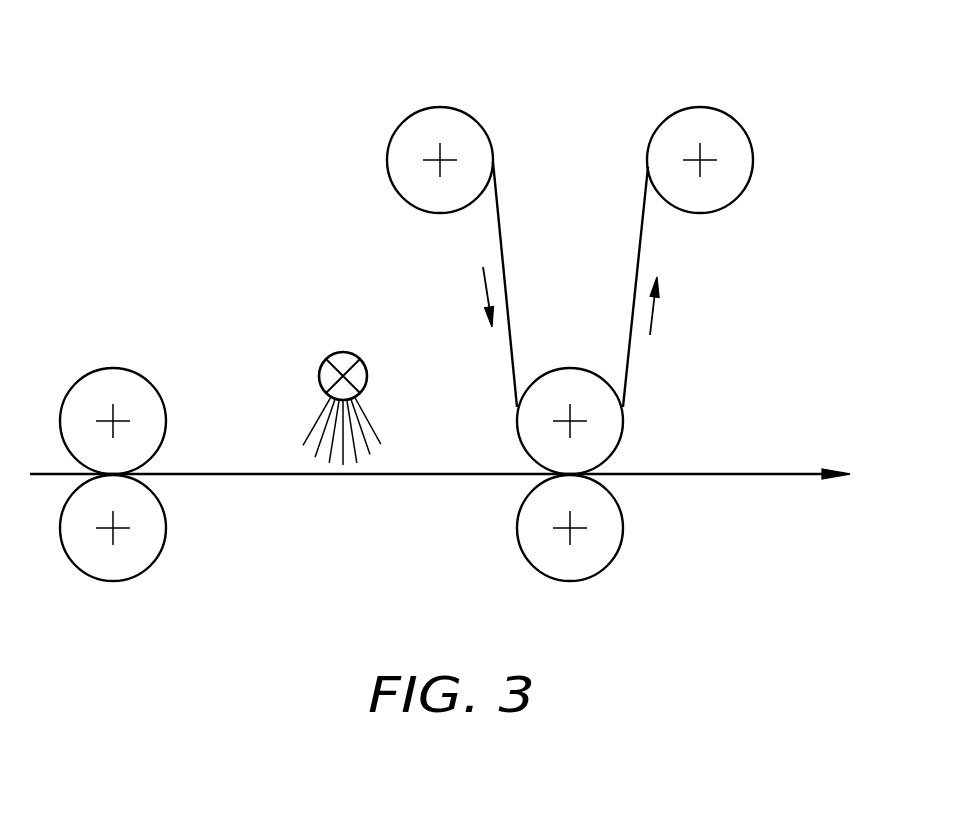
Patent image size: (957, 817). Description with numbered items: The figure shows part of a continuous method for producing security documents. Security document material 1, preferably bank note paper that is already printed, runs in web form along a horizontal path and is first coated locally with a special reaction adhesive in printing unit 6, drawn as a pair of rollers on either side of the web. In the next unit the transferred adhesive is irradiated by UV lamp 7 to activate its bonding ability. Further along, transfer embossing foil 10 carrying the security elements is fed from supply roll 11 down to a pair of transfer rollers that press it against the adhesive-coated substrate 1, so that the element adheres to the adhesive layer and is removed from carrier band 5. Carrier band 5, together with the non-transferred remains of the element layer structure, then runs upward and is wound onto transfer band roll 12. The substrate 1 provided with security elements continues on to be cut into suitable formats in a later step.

The security document material 1 is at (680, 473).
The carrier band 5 is at (642, 242).
The printing unit 6 is at (176, 386).
The UV lamp 7 is at (356, 375).
The transfer embossing foil 10 is at (498, 237).
The supply roll 11 is at (440, 117).
The transfer band roll 12 is at (702, 127).